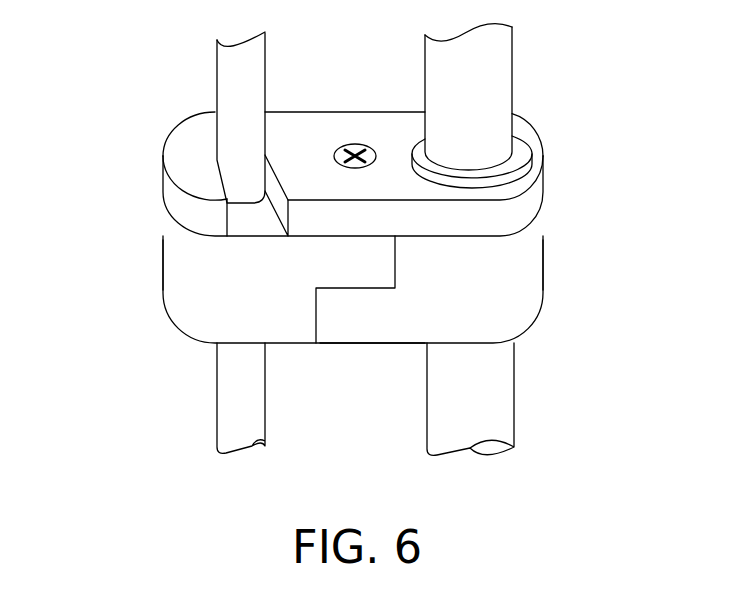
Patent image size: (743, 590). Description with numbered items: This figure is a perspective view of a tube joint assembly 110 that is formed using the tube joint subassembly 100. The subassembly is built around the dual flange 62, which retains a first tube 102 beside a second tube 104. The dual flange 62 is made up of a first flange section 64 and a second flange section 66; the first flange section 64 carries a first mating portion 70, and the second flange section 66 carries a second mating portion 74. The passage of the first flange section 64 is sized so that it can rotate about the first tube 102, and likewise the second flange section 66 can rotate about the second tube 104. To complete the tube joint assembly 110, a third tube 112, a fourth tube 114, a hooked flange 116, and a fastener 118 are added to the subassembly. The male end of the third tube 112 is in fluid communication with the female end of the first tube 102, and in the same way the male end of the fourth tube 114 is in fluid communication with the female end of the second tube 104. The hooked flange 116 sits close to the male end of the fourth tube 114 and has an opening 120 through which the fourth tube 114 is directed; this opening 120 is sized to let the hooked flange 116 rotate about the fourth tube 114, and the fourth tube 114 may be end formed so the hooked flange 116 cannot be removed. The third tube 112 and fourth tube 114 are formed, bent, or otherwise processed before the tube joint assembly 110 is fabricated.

The dual flange 62 is at (612, 234).
The first flange section 64 is at (163, 278).
The second flange section 66 is at (543, 288).
The first mating portion 70 is at (345, 277).
The second mating portion 74 is at (395, 333).
The tube joint subassembly 100 is at (98, 207).
The first tube 102 is at (260, 397).
The second tube 104 is at (503, 392).
The tube joint assembly 110 is at (87, 118).
The third tube 112 is at (220, 73).
The fourth tube 114 is at (505, 77).
The hooked flange 116 is at (543, 180).
The fastener 118 is at (355, 144).
The opening 120 is at (527, 140).